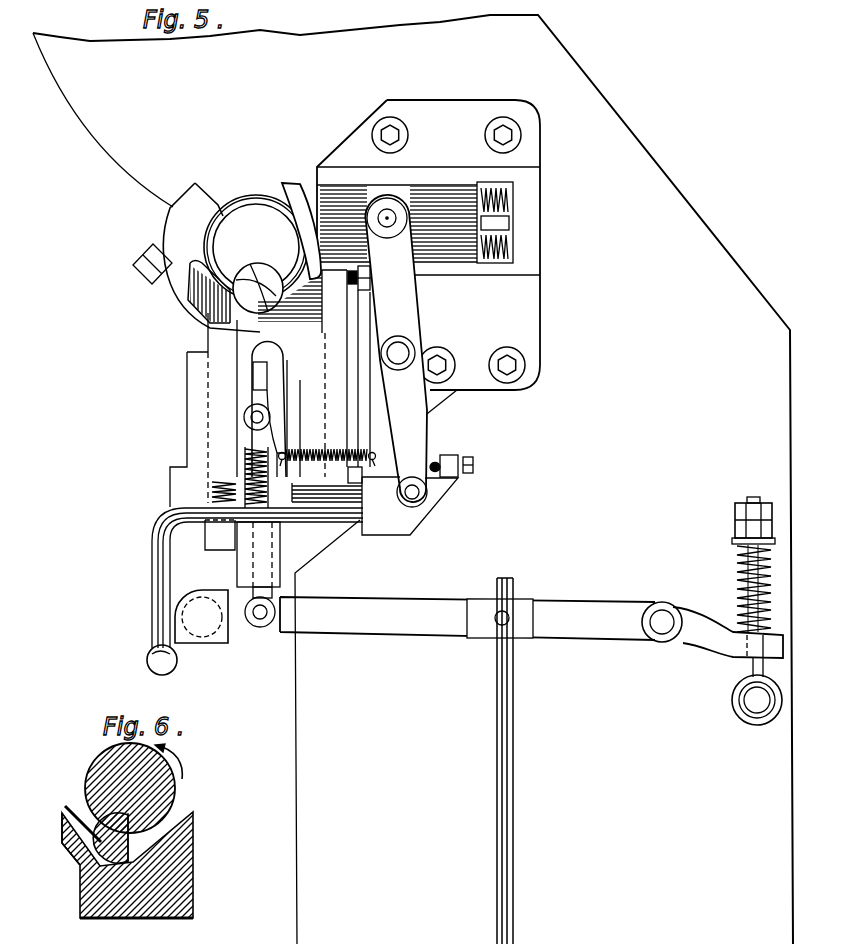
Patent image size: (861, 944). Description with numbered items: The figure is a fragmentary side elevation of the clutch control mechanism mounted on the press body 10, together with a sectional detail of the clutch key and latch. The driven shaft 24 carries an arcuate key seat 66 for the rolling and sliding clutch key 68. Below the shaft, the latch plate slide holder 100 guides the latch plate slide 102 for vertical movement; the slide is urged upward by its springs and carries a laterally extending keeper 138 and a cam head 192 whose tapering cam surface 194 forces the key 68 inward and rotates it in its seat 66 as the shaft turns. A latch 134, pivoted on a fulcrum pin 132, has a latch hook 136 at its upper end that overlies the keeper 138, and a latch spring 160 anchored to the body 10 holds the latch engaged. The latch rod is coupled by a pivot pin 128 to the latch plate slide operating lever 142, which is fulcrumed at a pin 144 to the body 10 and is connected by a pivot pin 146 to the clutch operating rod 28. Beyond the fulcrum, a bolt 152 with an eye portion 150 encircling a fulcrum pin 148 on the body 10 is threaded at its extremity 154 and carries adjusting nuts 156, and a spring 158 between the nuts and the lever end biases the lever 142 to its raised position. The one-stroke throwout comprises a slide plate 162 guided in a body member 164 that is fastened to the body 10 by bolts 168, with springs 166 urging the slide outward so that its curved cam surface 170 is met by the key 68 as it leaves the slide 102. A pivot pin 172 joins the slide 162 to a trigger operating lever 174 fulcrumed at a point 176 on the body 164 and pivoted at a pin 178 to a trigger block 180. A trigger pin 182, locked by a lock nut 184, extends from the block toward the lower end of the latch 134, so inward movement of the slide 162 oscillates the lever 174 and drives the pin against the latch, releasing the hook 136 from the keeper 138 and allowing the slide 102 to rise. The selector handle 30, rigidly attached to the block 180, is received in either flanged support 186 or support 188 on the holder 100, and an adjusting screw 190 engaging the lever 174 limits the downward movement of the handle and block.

In FIG. 5, the body 10 is at (310, 728).
In FIG. 5, the driven shaft 24 is at (246, 217).
In FIG. 6, the driven shaft 24 is at (103, 778).
In FIG. 5, the clutch operating rod 28 is at (500, 733).
In FIG. 5, the selector handle 30 is at (158, 567).
In FIG. 5, the key seat 66 is at (258, 263).
In FIG. 6, the key seat 66 is at (139, 826).
In FIG. 5, the clutch key 68 is at (263, 283).
In FIG. 6, the clutch key 68 is at (91, 805).
In FIG. 5, the latch plate slide holder 100 is at (197, 397).
In FIG. 5, the latch plate slide 102 is at (218, 340).
In FIG. 6, the latch plate slide 102 is at (177, 890).
In FIG. 5, the pivot pin 128 is at (260, 618).
In FIG. 5, the fulcrum pin 132 is at (250, 418).
In FIG. 5, the latch 134 is at (279, 402).
In FIG. 5, the latch hook 136 is at (277, 359).
In FIG. 5, the keeper 138 is at (258, 370).
In FIG. 5, the latch plate slide operating lever 142 is at (390, 617).
In FIG. 5, the fulcrum pin 144 is at (662, 620).
In FIG. 5, the pivot pin 146 is at (505, 616).
In FIG. 5, the fulcrum pin 148 is at (750, 707).
In FIG. 5, the eye portion 150 is at (737, 690).
In FIG. 5, the bolt 152 is at (743, 669).
In FIG. 5, the screw-threaded extremity 154 is at (752, 500).
In FIG. 5, the adjusting nuts 156 is at (742, 513).
In FIG. 5, the spring 158 is at (740, 577).
In FIG. 5, the latch spring 160 is at (338, 444).
In FIG. 5, the one stroke latch slide plate 162 is at (435, 195).
In FIG. 5, the body member 164 is at (532, 236).
In FIG. 5, the springs 166 is at (515, 198).
In FIG. 5, the fastening bolts 168 is at (510, 370).
In FIG. 5, the cam surface 170 is at (293, 187).
In FIG. 5, the pivot pin 172 is at (383, 217).
In FIG. 5, the trigger operating lever 174 is at (402, 308).
In FIG. 5, the fulcrum 176 is at (402, 352).
In FIG. 5, the pivot pin 178 is at (417, 491).
In FIG. 5, the trigger block 180 is at (393, 518).
In FIG. 5, the trigger pin 182 is at (352, 277).
In FIG. 5, the lock nut 184 is at (357, 490).
In FIG. 5, the flanged support 186 is at (215, 538).
In FIG. 5, the flanged support 188 is at (205, 630).
In FIG. 5, the adjusting screw 190 is at (470, 459).
In FIG. 6, the cam head 192 is at (67, 847).
In FIG. 6, the cam surface 194 is at (64, 812).